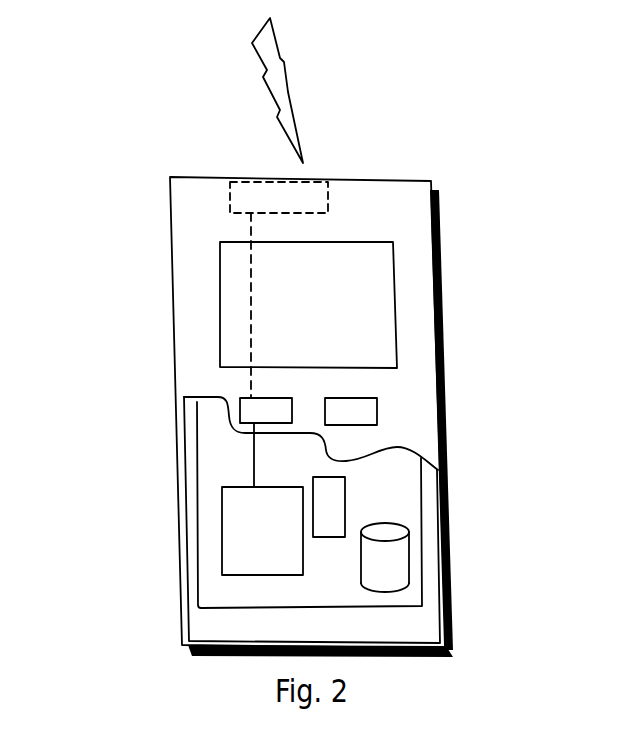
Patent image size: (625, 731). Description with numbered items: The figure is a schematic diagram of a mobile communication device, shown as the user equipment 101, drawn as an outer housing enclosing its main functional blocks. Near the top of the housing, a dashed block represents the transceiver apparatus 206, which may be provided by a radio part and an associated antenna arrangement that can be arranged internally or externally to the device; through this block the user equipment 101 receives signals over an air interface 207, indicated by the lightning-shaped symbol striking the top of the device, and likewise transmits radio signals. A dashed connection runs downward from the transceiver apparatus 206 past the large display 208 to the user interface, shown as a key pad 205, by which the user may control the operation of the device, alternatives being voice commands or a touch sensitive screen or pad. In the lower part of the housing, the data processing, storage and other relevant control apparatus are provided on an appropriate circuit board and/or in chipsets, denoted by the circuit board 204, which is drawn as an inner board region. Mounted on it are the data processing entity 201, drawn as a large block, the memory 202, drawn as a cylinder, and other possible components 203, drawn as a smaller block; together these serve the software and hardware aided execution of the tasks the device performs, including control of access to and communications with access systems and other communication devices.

The user equipment 101 is at (173, 217).
The data processing entity 201 is at (226, 513).
The memory 202 is at (380, 568).
The other possible components 203 is at (330, 492).
The circuit board 204 is at (222, 590).
The key pad 205 is at (243, 412).
The transceiver apparatus 206 is at (317, 192).
The air interface 207 is at (307, 112).
The display 208 is at (235, 292).